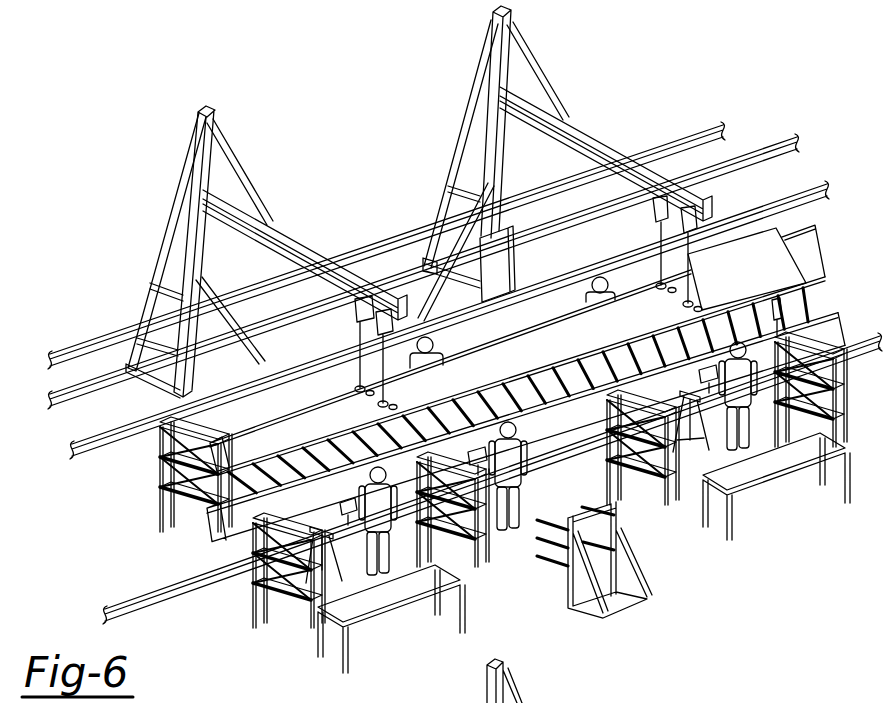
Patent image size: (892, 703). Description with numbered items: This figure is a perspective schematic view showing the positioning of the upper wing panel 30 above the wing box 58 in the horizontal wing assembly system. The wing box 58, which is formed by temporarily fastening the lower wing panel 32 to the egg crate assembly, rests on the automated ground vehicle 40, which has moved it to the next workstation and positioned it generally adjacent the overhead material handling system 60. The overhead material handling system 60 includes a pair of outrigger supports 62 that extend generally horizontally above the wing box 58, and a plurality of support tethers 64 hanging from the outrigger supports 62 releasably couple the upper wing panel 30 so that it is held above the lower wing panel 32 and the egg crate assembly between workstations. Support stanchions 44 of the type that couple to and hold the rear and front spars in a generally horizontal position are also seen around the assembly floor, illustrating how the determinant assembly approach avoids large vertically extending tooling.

The upper wing panel 30 is at (778, 266).
The lower wing panel 32 is at (203, 508).
The automated ground vehicle 40 is at (678, 440).
The support stanchions 44 is at (256, 592).
The wing box 58 is at (808, 301).
The overhead material handling system 60 is at (598, 80).
The outrigger supports 62 is at (288, 243).
The support tethers 64 is at (354, 330).